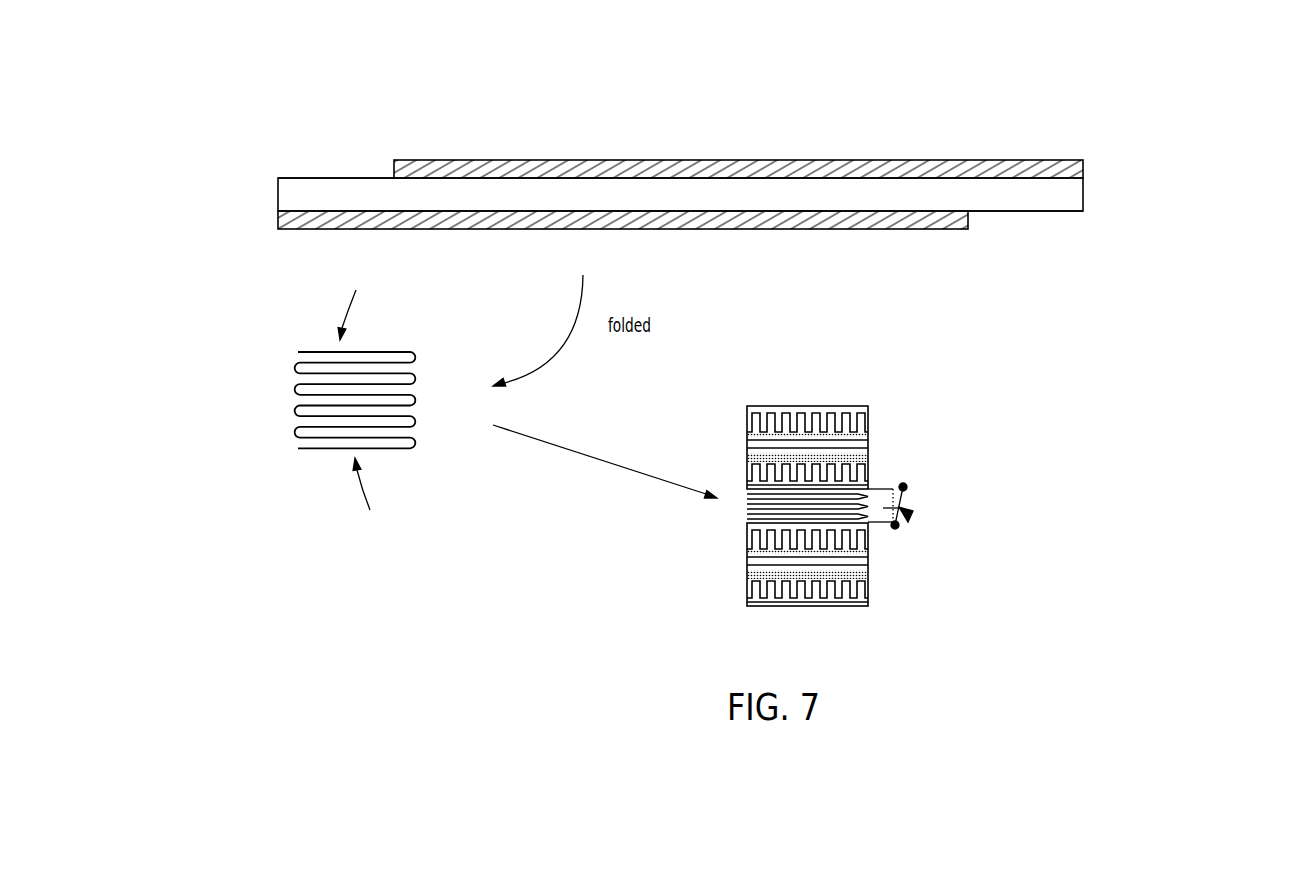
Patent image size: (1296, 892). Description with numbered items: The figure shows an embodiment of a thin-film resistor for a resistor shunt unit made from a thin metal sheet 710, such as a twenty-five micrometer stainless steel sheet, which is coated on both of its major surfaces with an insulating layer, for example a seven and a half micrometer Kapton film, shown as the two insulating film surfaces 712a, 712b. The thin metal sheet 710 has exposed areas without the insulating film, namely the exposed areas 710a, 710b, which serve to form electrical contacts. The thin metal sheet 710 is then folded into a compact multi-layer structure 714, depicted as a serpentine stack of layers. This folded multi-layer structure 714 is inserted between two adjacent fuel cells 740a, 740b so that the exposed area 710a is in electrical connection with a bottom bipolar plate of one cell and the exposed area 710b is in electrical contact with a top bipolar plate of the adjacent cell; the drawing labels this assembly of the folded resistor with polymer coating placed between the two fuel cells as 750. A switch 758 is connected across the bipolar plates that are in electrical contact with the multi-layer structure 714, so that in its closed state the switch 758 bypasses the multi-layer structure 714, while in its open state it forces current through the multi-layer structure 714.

The thin metal sheet 710 is at (1080, 184).
The exposed area 710a is at (334, 156).
The exposed area 710b is at (1030, 228).
The insulating layer major surface 712a is at (688, 170).
The insulating layer major surface 712b is at (697, 228).
The compact multi-layer structure 714 is at (288, 342).
The fuel cell 740a is at (898, 428).
The fuel cell 740b is at (898, 592).
The folded resistor with polymer coating placed between two fuel cells 750 is at (935, 515).
The switch 758 is at (908, 492).